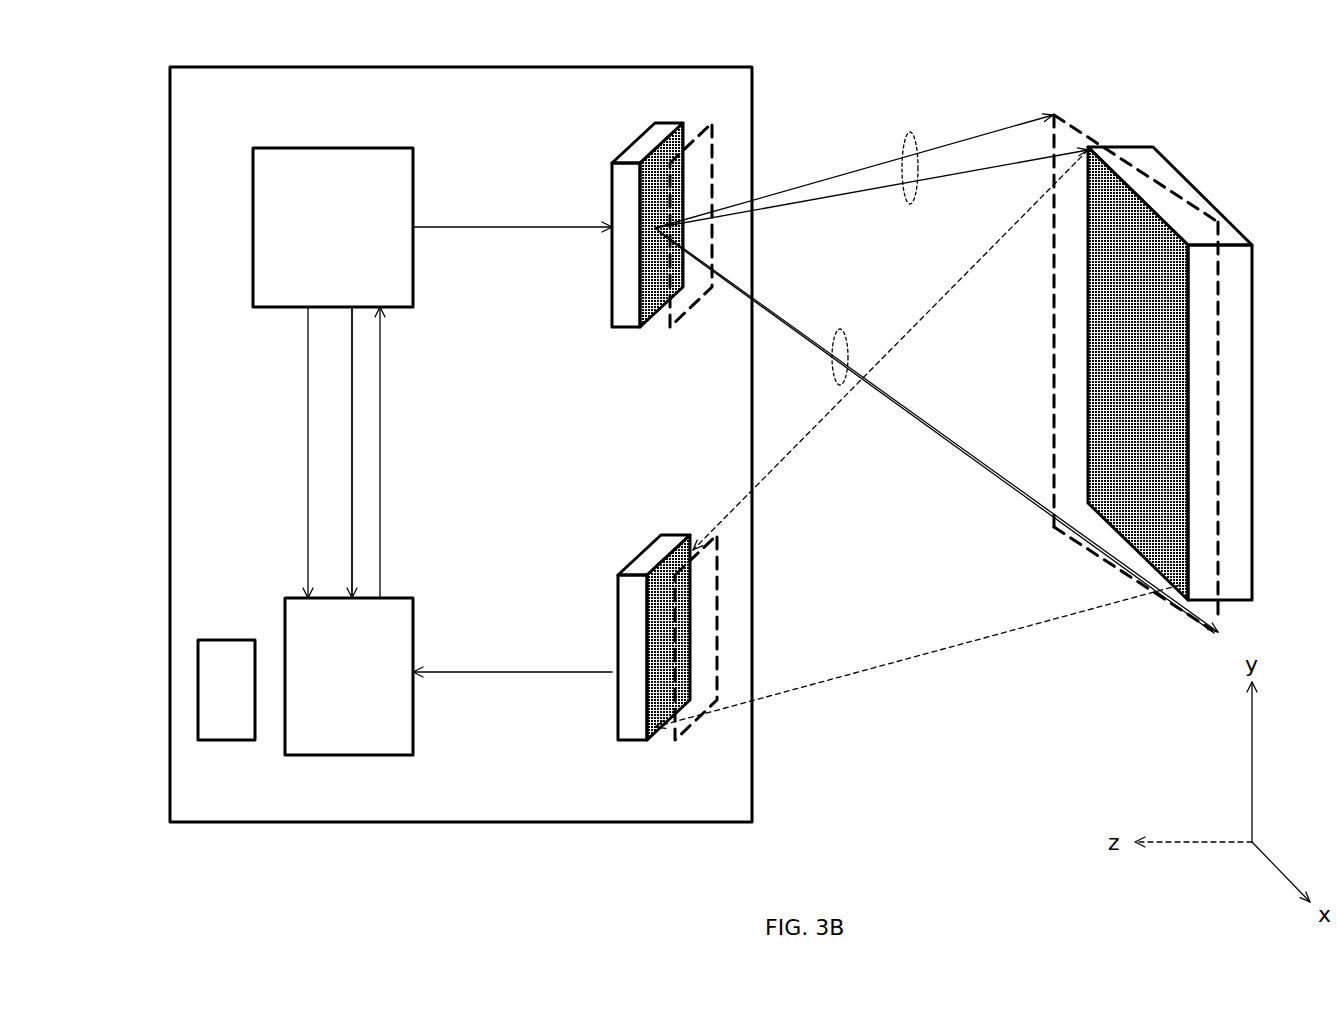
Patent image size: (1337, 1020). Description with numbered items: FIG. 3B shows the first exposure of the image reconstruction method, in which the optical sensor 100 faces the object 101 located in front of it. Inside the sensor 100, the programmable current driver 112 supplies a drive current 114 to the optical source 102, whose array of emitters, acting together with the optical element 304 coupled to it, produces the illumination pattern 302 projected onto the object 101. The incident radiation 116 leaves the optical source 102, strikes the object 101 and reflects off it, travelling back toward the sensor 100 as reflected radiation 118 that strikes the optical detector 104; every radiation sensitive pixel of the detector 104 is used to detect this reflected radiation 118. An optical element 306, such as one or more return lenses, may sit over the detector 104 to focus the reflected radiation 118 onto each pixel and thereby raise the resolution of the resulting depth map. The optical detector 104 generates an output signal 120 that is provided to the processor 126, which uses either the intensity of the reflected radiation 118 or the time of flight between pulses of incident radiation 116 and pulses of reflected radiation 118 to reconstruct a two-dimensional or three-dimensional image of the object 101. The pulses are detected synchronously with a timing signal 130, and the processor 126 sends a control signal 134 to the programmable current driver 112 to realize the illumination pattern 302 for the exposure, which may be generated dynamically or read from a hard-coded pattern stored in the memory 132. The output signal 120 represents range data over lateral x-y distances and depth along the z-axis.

The optical sensor 100 is at (400, 822).
The object 101 is at (1170, 373).
The optical source 102 is at (668, 328).
The optical detector 104 is at (652, 560).
The programmable current driver 112 is at (333, 227).
The drive current 114 is at (483, 222).
The incident radiation 116 is at (892, 120).
The reflected radiation 118 is at (908, 326).
The output signal 120 is at (483, 665).
The processor 126 is at (272, 448).
The timing signal 130 is at (353, 373).
The memory 132 is at (226, 690).
The control signal 134 is at (383, 457).
The illumination pattern 302 is at (1078, 128).
The optical element 304 is at (695, 120).
The optical element 306 is at (697, 717).